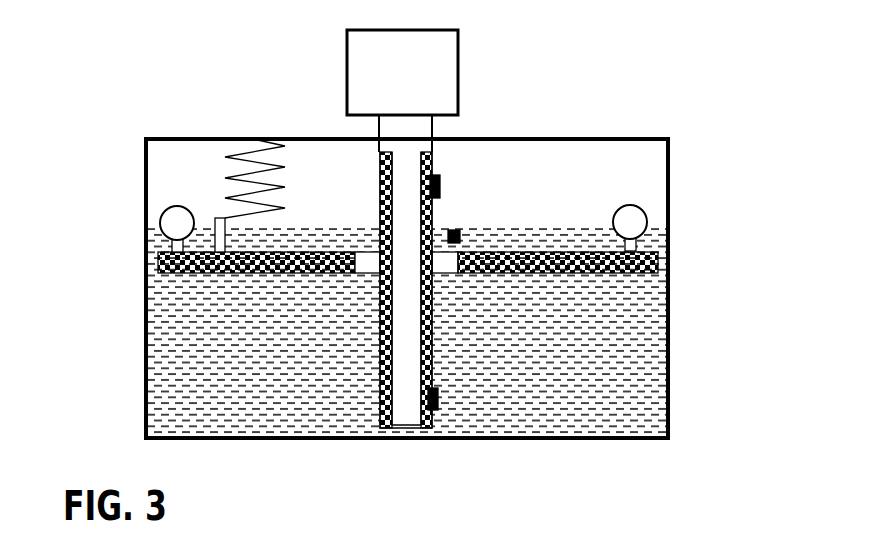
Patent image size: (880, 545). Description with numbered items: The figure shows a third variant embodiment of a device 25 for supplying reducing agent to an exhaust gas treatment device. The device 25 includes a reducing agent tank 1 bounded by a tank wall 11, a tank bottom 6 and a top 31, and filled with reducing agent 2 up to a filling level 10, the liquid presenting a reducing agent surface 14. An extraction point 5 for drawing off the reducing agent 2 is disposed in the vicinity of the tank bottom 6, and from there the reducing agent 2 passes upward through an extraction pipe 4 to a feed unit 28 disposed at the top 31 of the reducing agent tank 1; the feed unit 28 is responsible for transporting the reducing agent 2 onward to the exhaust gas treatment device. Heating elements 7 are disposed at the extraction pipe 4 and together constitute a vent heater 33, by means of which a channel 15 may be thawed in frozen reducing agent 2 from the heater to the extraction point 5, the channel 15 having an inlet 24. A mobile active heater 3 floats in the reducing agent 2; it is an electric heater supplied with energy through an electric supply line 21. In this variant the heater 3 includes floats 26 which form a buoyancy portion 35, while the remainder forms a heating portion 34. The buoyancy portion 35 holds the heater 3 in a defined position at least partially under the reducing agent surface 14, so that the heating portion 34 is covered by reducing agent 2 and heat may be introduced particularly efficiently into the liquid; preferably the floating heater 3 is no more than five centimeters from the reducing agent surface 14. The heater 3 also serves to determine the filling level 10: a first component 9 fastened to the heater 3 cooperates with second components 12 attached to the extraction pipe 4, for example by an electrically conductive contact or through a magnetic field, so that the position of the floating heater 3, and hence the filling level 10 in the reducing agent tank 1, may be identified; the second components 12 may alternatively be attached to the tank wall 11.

The reducing agent tank 1 is at (374, 257).
The reducing agent 2 is at (433, 342).
The heater 3 is at (690, 215).
The extraction pipe 4 is at (434, 115).
The extraction point 5 is at (395, 465).
The tank bottom 6 is at (501, 473).
The heating elements 7 is at (422, 445).
The first component 9 is at (491, 155).
The filling level 10 is at (105, 211).
The tank wall 11 is at (701, 298).
The second components 12 is at (441, 278).
The reducing agent surface 14 is at (581, 149).
The channel 15 is at (350, 443).
The electric supply line 21 is at (250, 157).
The inlet 24 is at (342, 204).
The device 25 is at (673, 57).
The floats 26 is at (386, 192).
The feed unit 28 is at (421, 57).
The top 31 is at (565, 70).
The vent heater 33 is at (343, 326).
The heating portion 34 is at (413, 265).
The buoyancy portion 35 is at (443, 135).